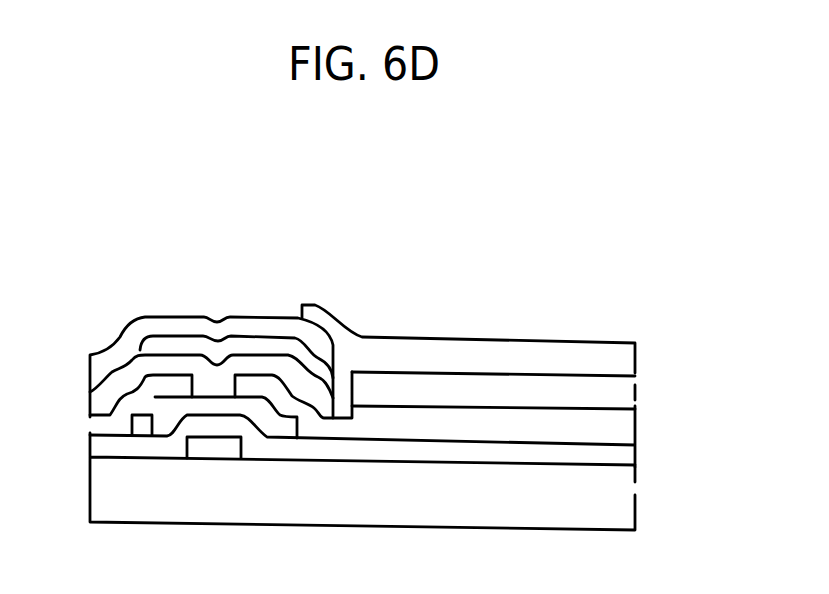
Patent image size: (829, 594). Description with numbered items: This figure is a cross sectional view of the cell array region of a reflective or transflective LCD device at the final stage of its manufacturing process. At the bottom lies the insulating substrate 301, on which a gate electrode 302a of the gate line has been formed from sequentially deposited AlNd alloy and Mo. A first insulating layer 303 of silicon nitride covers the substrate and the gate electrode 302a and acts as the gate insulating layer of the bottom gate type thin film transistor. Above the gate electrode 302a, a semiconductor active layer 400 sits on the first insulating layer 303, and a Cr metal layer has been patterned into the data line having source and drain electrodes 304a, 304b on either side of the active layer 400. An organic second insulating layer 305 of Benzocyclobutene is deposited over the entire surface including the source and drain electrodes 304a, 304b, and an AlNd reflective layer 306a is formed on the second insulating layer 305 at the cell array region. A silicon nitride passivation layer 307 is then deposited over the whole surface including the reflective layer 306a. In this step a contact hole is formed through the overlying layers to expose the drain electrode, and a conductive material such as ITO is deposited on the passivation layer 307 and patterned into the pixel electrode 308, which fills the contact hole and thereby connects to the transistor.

The insulating substrate 301 is at (627, 507).
The gate electrode 302a is at (211, 447).
The first insulating layer 303 is at (627, 457).
The source electrode 304a is at (150, 399).
The drain electrode 304b is at (343, 427).
The second insulating layer 305 is at (177, 342).
The reflective layer 306a is at (278, 350).
The passivation layer 307 is at (130, 343).
The pixel electrode 308 is at (510, 350).
The active layer 400 is at (278, 427).